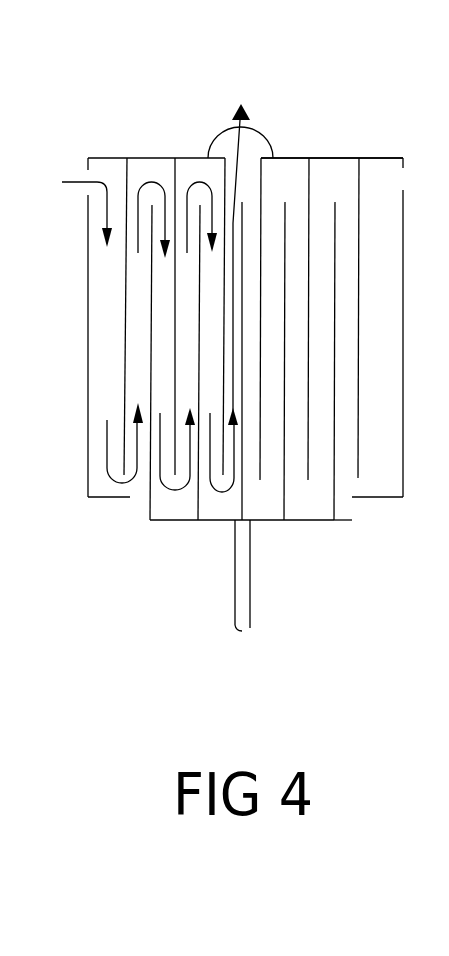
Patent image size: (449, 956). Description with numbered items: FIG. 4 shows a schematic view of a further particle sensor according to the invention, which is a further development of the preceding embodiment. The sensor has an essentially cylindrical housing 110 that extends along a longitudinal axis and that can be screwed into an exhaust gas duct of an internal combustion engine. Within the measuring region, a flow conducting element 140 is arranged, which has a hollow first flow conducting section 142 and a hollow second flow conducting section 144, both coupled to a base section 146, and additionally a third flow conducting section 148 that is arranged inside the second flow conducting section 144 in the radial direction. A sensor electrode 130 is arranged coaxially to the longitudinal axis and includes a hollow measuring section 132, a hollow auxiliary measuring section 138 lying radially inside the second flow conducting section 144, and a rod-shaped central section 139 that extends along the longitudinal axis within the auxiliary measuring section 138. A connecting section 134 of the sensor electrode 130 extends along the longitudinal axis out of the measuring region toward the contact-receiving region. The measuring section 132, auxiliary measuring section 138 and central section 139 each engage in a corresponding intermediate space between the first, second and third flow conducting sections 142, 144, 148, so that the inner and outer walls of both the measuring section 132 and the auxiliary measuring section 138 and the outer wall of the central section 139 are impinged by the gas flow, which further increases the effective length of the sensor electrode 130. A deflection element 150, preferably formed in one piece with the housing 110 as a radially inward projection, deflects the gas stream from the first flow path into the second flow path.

The housing 110 is at (87, 233).
The sensor electrode 130 is at (188, 625).
The measuring section 132 is at (333, 520).
The connecting section 134 is at (243, 610).
The auxiliary measuring section 138 is at (288, 500).
The central section 139 is at (227, 500).
The flow conducting element 140 is at (80, 120).
The first flow conducting section 142 is at (125, 310).
The second flow conducting section 144 is at (168, 170).
The base section 146 is at (292, 157).
The third flow conducting section 148 is at (224, 183).
The deflection element 150 is at (112, 498).